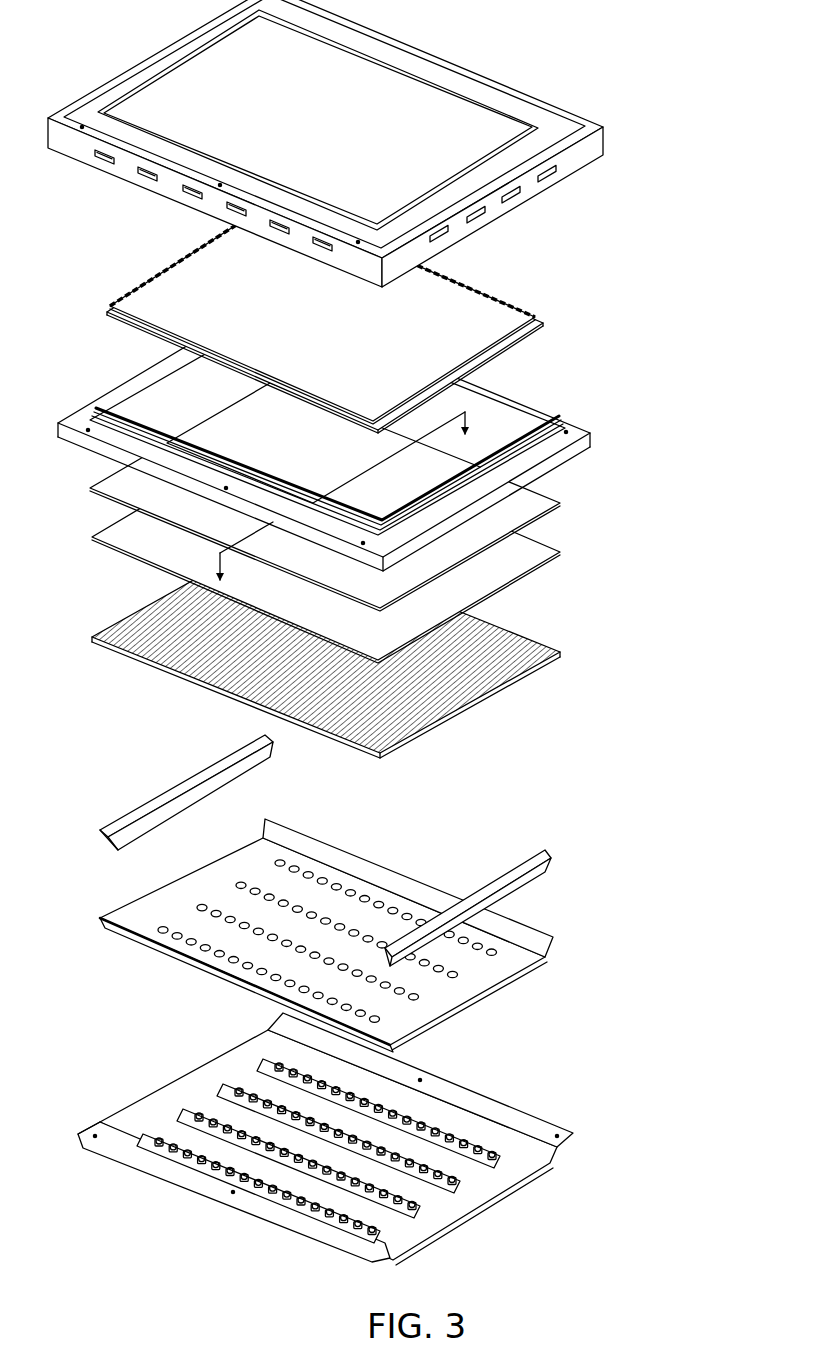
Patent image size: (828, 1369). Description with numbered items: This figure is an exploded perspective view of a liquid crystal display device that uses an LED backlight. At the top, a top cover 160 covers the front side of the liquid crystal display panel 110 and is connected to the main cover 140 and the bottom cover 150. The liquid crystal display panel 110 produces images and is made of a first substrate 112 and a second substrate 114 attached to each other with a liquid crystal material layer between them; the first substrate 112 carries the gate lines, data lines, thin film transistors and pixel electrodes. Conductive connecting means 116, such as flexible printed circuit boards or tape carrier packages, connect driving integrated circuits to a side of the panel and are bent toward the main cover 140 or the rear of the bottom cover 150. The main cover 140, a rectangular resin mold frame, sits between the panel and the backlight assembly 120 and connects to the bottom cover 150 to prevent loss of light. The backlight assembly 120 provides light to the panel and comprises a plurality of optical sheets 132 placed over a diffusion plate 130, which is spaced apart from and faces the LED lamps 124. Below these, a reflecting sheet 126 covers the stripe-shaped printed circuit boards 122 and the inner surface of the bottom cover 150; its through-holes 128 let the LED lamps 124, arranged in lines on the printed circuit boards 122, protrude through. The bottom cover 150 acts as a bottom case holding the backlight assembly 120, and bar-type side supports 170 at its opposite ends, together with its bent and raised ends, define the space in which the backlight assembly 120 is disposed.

The liquid crystal display panel 110 is at (380, 317).
The first substrate 112 is at (527, 340).
The second substrate 114 is at (500, 318).
The conductive connecting means 116 is at (432, 272).
The backlight assembly 120 is at (402, 813).
The printed circuit board 122 is at (503, 1153).
The LED lamp 124 is at (475, 1148).
The reflecting sheet 126 is at (357, 935).
The through-hole 128 is at (493, 947).
The diffusion plate 130 is at (527, 688).
The optical sheet 132 is at (368, 523).
The main cover 140 is at (583, 432).
The bottom cover 150 is at (553, 1158).
The top cover 160 is at (600, 143).
The bar-type side support 170 is at (262, 760).